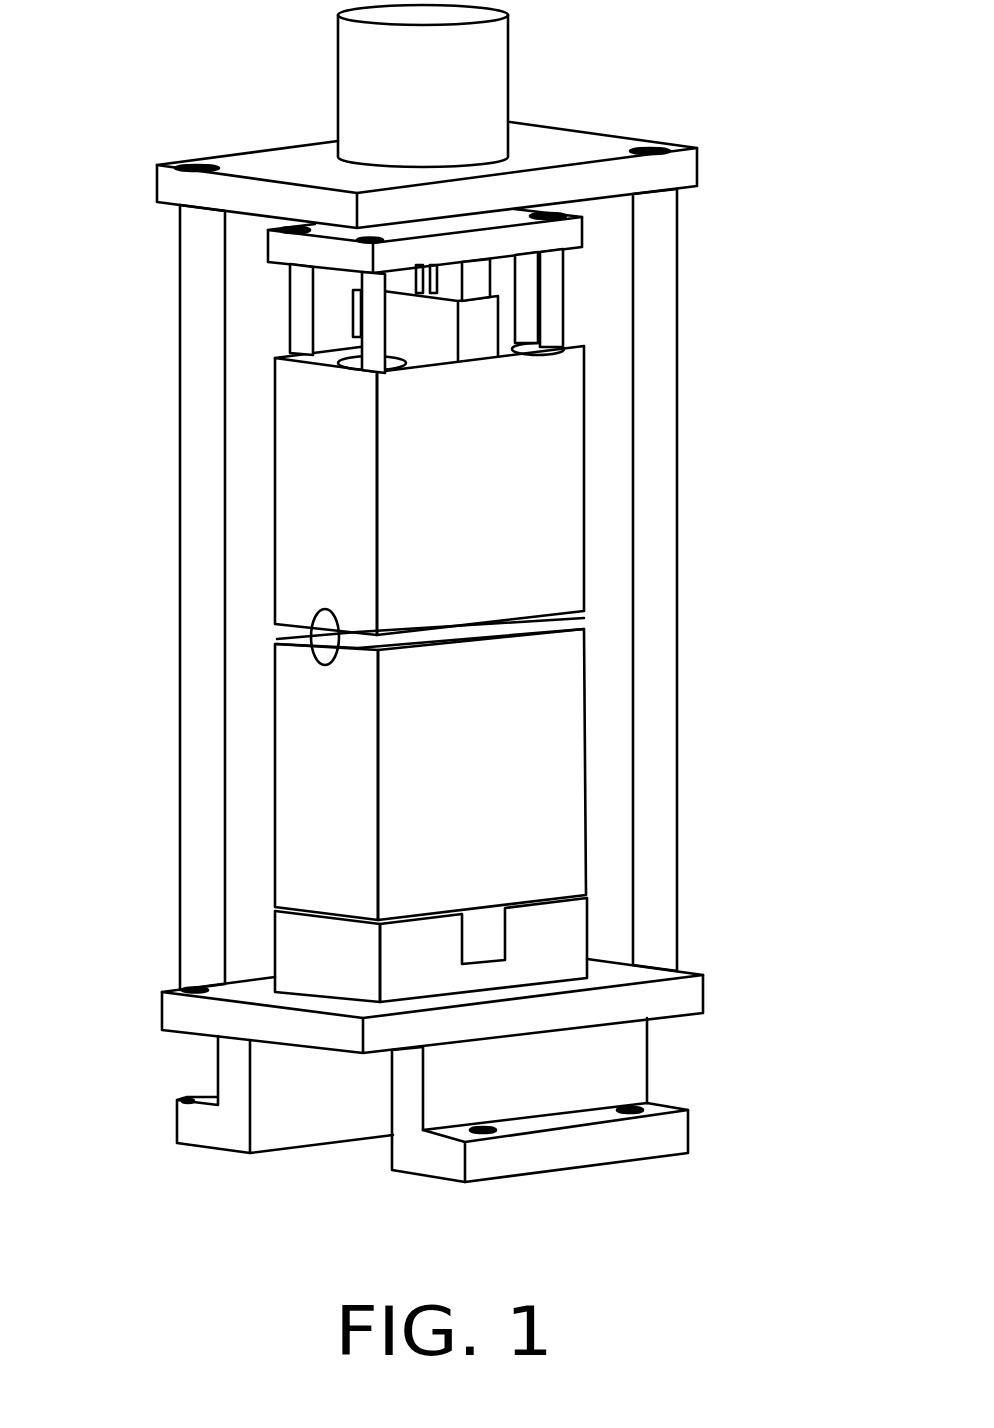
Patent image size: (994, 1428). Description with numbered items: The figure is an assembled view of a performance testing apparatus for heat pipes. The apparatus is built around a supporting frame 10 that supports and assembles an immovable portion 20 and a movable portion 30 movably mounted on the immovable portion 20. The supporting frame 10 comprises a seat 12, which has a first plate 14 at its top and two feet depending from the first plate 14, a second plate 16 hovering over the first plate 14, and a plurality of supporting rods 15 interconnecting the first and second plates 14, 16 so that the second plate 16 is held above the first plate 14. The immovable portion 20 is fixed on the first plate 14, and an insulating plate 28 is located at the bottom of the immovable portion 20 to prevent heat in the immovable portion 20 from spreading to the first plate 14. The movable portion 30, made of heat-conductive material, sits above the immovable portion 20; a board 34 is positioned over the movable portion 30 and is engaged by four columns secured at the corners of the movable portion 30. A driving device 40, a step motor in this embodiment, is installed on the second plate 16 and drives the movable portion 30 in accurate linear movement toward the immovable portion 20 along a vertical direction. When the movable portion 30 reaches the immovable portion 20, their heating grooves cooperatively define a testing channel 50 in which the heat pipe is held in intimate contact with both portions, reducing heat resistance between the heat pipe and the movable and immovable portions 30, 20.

The supporting frame 10 is at (481, 591).
The seat 12 is at (498, 1100).
The first plate 14 is at (677, 998).
The supporting rods 15 is at (655, 514).
The second plate 16 is at (673, 177).
The immovable portion 20 is at (330, 768).
The insulating plate 28 is at (318, 948).
The movable portion 30 is at (305, 443).
The board 34 is at (290, 245).
The driving device 40 is at (470, 62).
The testing channel 50 is at (327, 620).